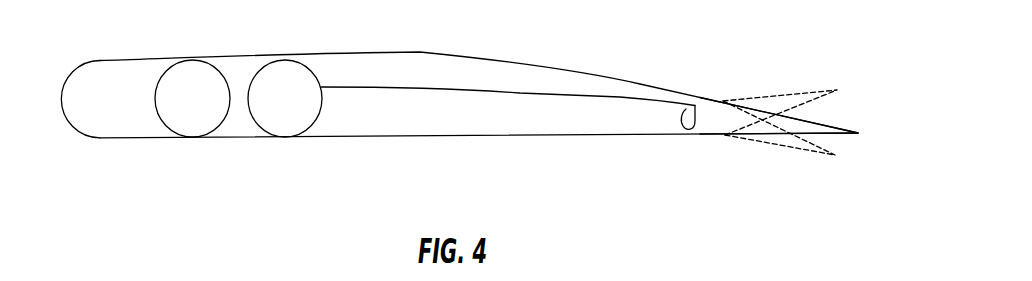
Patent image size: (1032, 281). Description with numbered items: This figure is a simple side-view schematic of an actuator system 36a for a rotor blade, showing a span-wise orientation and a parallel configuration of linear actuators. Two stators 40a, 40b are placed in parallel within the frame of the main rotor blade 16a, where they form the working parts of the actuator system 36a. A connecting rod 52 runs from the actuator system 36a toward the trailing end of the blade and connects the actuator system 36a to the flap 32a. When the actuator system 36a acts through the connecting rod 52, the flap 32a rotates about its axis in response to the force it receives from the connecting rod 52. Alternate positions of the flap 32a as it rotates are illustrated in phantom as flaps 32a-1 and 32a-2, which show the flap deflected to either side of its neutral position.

The main rotor blade 16a is at (100, 60).
The actuator system 36a is at (238, 66).
The stator 40a is at (182, 125).
The stator 40b is at (278, 125).
The connecting rod 52 is at (533, 93).
The flap 32a is at (826, 127).
The flap alternate position 32a-1 is at (826, 155).
The flap alternate position 32a-2 is at (823, 90).